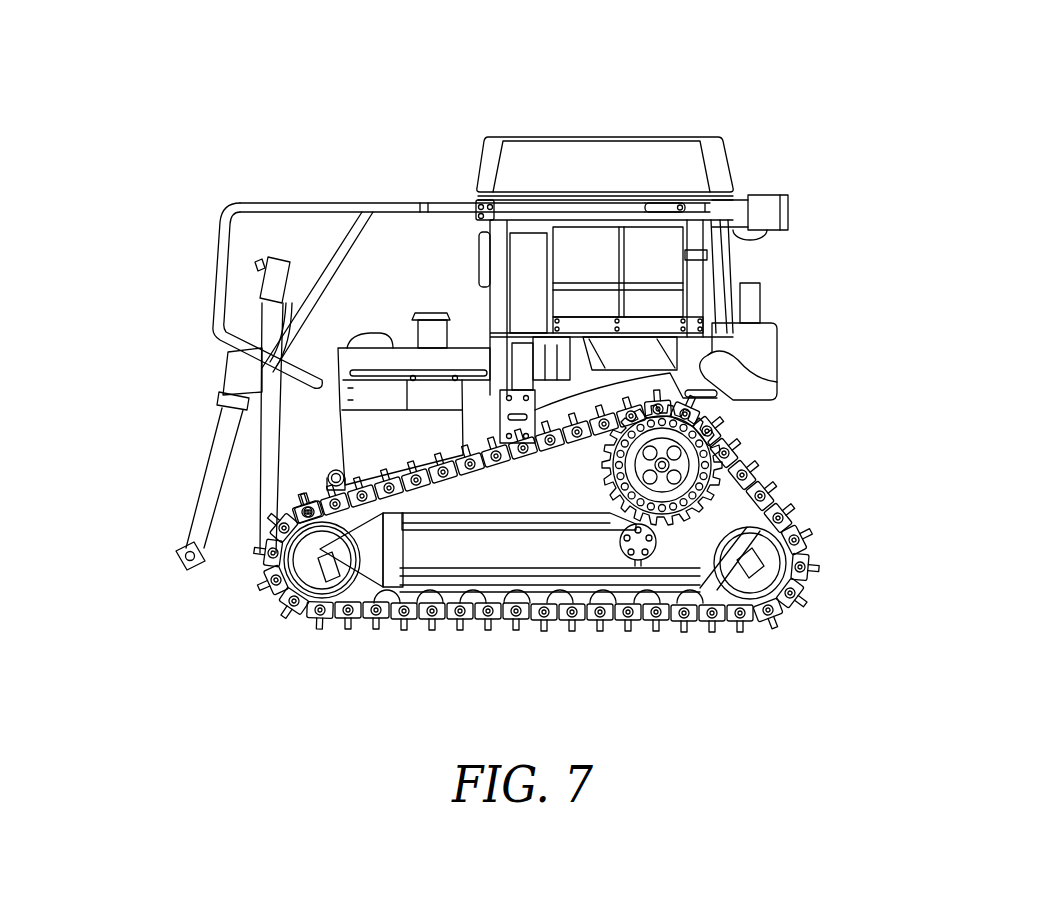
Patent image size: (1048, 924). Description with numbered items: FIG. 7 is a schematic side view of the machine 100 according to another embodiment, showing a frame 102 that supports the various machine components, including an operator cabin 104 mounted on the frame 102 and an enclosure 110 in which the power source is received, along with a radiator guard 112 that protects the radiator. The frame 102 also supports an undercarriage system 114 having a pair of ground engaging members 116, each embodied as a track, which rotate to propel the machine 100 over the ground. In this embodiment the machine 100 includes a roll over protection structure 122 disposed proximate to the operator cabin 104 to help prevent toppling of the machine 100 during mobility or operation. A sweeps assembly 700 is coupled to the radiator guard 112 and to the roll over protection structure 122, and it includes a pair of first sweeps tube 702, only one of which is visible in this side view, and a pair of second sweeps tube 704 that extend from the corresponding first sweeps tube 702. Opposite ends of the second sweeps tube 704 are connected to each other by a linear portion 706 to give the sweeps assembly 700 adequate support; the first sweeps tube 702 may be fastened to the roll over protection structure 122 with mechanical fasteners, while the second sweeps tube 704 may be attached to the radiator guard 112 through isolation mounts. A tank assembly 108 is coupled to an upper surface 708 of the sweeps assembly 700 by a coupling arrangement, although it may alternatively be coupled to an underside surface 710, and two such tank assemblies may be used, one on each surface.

The machine 100 is at (958, 88).
The frame 102 is at (478, 420).
The operator cabin 104 is at (648, 258).
The tank assembly 108 is at (666, 103).
The enclosure 110 is at (374, 418).
The radiator guard 112 is at (263, 444).
The undercarriage system 114 is at (250, 572).
The ground engaging members 116 is at (631, 640).
The roll over protection structure 122 is at (772, 213).
The sweeps assembly 700 is at (400, 180).
The first sweeps tube 702 is at (458, 206).
The second sweeps tube 704 is at (222, 273).
The linear portion 706 is at (329, 278).
The upper surface 708 is at (430, 208).
The underside surface 710 is at (428, 210).